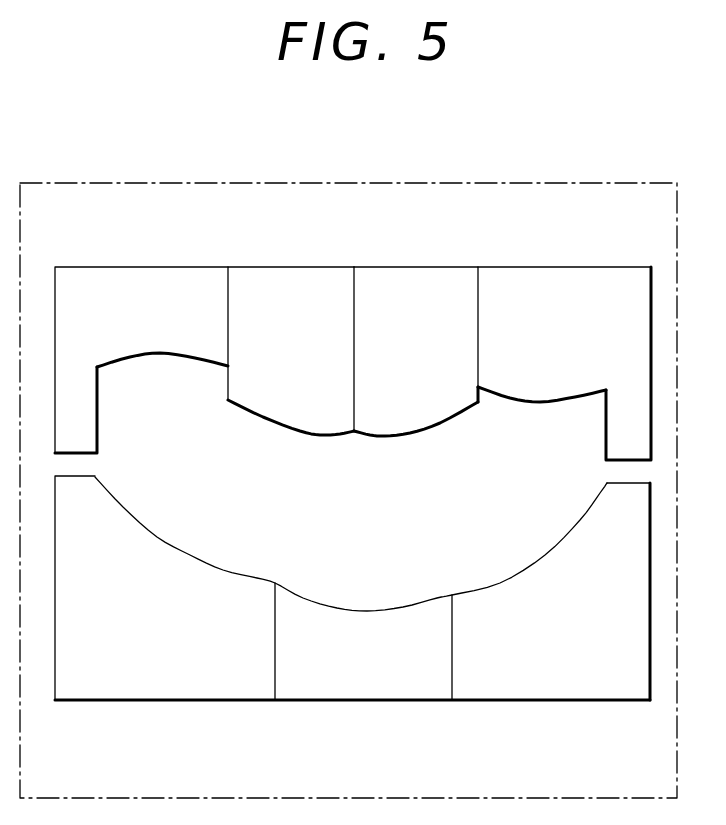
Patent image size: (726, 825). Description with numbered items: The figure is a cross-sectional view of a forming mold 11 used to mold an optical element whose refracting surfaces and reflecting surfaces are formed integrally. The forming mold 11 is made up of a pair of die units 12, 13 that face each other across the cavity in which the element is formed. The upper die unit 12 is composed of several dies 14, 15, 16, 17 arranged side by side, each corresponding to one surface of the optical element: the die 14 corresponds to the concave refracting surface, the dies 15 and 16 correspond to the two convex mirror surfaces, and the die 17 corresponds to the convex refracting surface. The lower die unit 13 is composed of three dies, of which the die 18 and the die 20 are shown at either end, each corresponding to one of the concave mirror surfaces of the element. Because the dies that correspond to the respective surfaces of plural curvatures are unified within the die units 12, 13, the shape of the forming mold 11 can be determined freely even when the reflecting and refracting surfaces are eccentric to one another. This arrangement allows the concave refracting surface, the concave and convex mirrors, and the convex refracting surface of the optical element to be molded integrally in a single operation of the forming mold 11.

The forming mold 11 is at (237, 183).
The die unit 12 is at (347, 278).
The die unit 13 is at (382, 702).
The die 14 is at (562, 280).
The die 15 is at (410, 278).
The die 16 is at (298, 278).
The die 17 is at (142, 275).
The die 18 is at (550, 686).
The die 20 is at (153, 686).